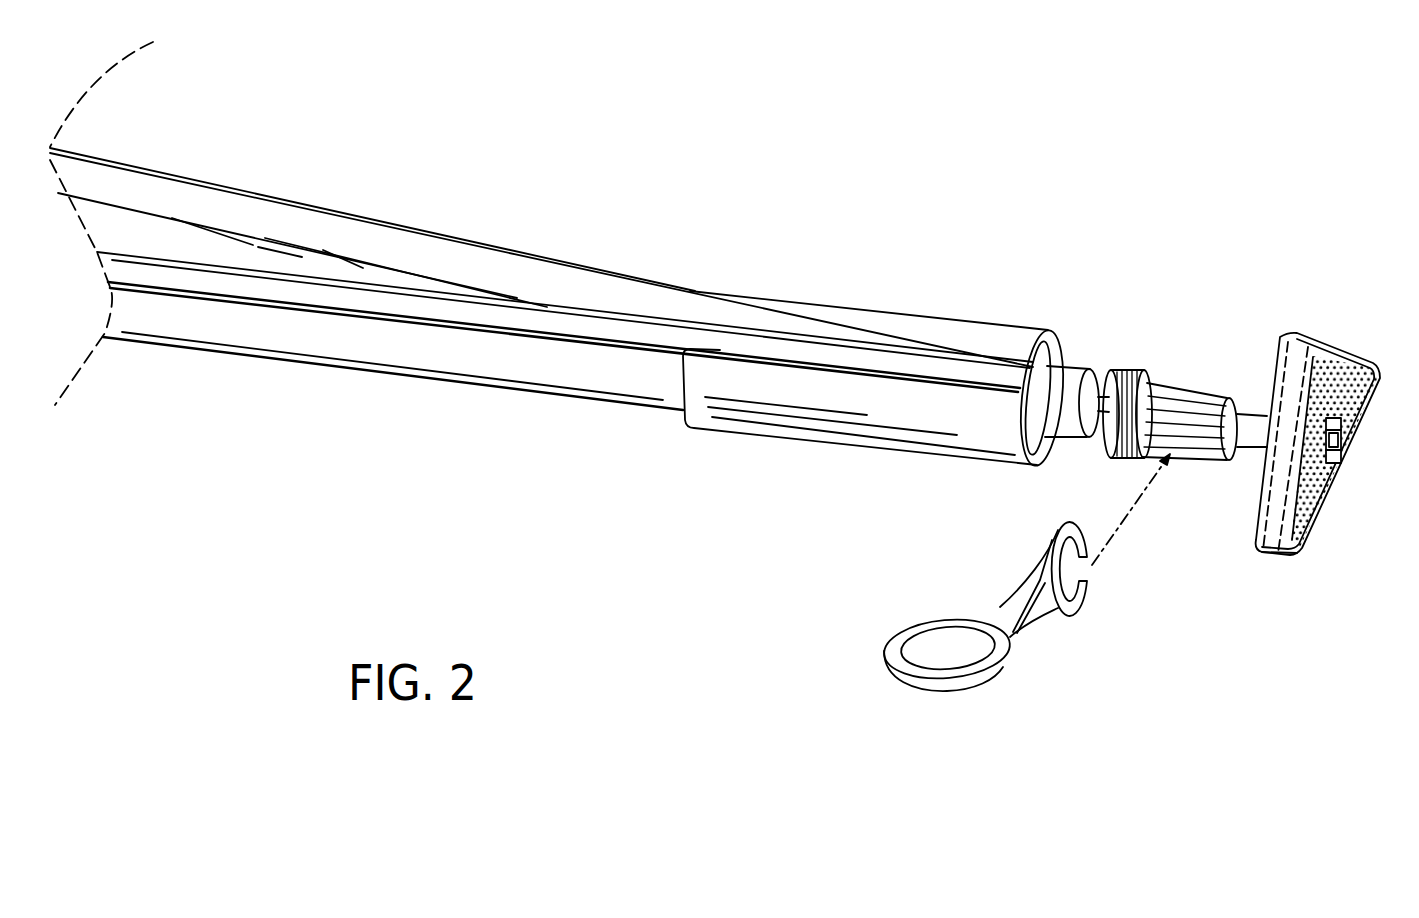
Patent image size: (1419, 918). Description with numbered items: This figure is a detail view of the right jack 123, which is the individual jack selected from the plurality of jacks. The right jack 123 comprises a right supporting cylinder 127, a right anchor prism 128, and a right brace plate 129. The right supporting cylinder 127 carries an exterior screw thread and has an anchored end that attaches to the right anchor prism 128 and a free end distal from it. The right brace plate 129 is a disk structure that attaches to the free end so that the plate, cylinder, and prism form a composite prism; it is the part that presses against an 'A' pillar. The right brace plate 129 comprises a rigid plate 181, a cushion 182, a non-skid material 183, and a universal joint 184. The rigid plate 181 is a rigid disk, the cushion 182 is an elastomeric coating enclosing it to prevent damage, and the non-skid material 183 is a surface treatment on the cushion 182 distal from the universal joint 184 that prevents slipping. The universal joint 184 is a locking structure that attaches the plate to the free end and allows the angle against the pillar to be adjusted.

The right jack 123 is at (1090, 357).
The right supporting cylinder 127 is at (1147, 377).
The right anchor prism 128 is at (1065, 383).
The right brace plate 129 is at (1299, 441).
The rigid plate 181 is at (1268, 523).
The cushion 182 is at (1293, 555).
The non-skid material 183 is at (1333, 477).
The universal joint 184 is at (1248, 392).